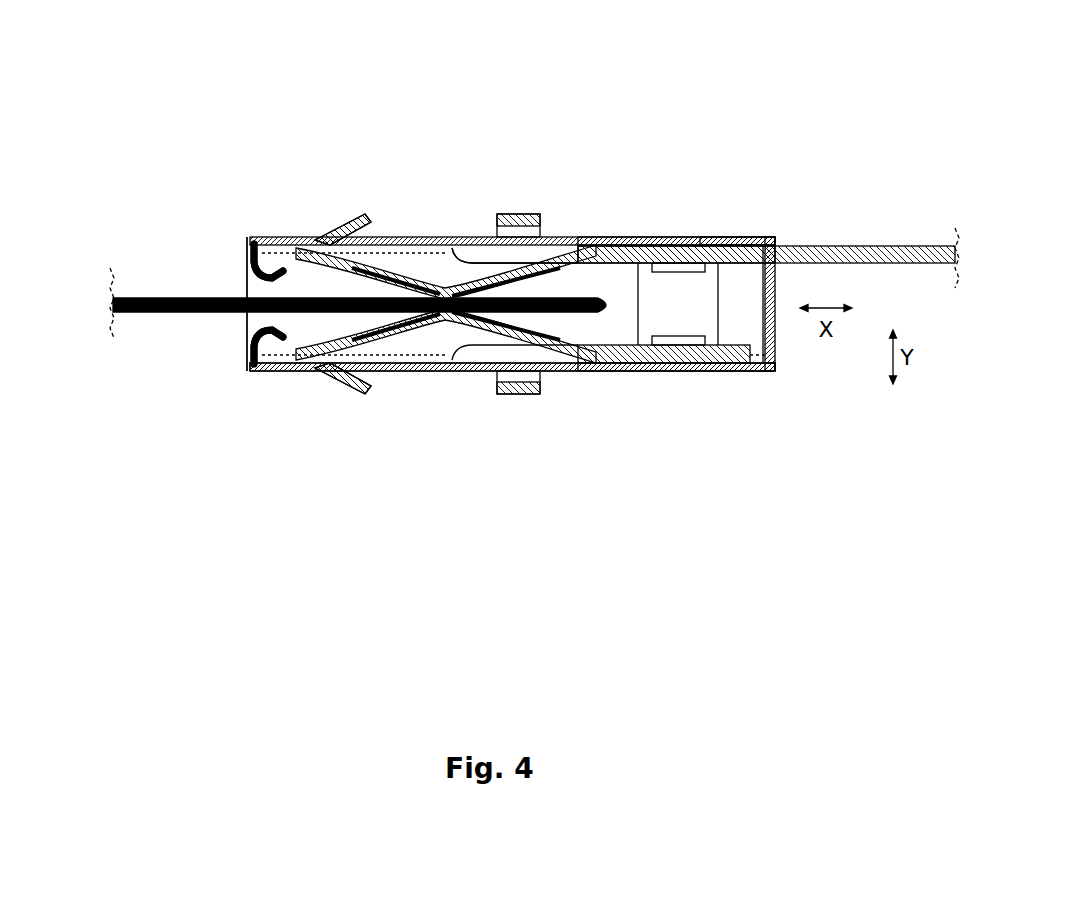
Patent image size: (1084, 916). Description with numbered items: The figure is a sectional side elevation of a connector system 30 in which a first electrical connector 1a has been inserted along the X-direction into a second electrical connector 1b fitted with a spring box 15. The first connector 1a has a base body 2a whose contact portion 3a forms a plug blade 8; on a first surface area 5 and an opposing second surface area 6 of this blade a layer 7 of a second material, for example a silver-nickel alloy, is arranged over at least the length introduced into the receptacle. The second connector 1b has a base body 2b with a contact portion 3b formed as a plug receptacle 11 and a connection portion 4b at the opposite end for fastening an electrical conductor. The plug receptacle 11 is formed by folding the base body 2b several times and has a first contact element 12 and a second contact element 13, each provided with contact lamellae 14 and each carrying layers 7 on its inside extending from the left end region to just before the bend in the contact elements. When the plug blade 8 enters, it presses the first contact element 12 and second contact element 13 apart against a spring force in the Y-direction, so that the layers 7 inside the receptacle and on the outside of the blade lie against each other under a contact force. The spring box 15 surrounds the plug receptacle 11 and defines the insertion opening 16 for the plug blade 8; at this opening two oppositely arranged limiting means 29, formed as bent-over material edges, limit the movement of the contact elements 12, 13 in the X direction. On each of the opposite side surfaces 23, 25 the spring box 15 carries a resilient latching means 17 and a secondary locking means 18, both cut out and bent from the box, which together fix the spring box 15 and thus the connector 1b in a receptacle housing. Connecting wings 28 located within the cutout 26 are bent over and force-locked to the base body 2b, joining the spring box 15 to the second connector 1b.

The electrical connector 1a is at (352, 404).
The electrical connector 1b is at (745, 236).
The base body 2a is at (178, 312).
The base body 2b is at (647, 243).
The contact portion 3a is at (292, 372).
The contact portion 3b is at (322, 240).
The connection portion 4b is at (925, 247).
The first surface area 5 is at (431, 187).
The second surface area 6 is at (452, 345).
The layer of the second material 7 is at (432, 238).
The plug blade 8 is at (628, 363).
The plug receptacle 11 is at (463, 272).
The first contact element 12 is at (456, 153).
The second contact element 13 is at (398, 332).
The contact lamellae 14 is at (395, 240).
The spring box 15 is at (652, 366).
The insertion opening 16 is at (324, 379).
The resilient latching means 17 is at (355, 222).
The secondary locking means 18 is at (520, 222).
The side surface 23 is at (618, 232).
The side surface 25 is at (482, 372).
The first cutout 26 is at (708, 320).
The connecting wings 28 is at (693, 265).
The limiting means 29 is at (240, 237).
The connector system 30 is at (230, 194).